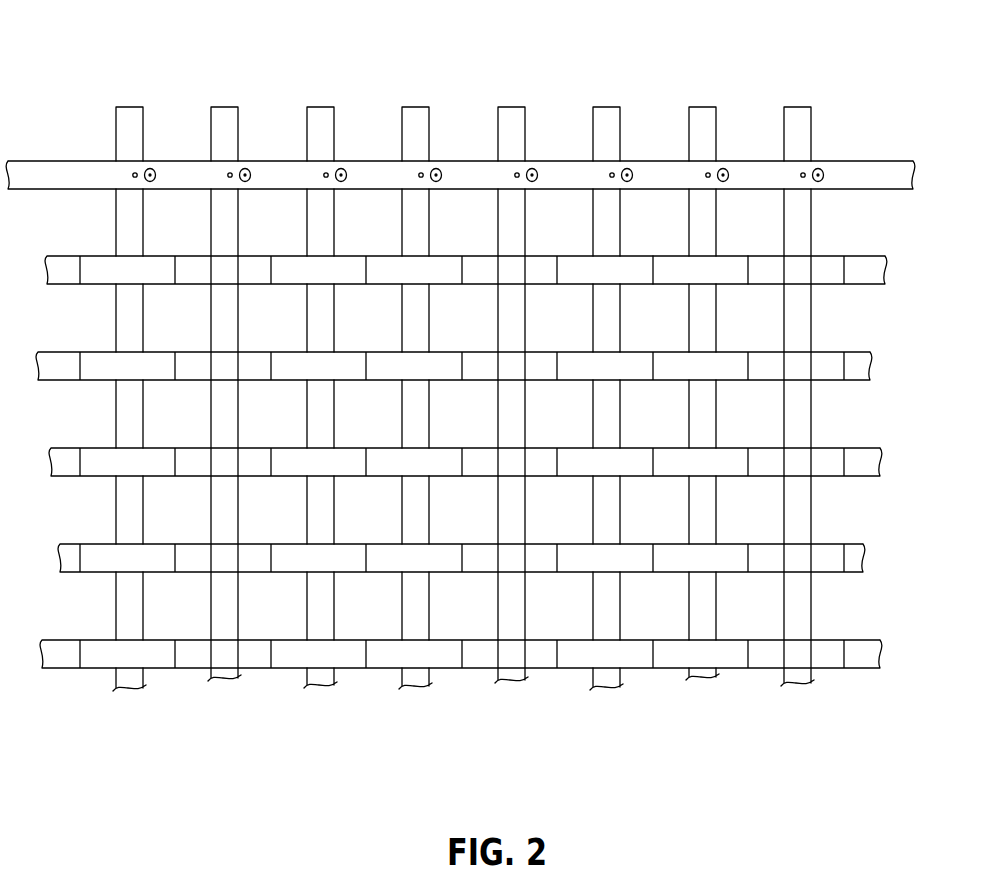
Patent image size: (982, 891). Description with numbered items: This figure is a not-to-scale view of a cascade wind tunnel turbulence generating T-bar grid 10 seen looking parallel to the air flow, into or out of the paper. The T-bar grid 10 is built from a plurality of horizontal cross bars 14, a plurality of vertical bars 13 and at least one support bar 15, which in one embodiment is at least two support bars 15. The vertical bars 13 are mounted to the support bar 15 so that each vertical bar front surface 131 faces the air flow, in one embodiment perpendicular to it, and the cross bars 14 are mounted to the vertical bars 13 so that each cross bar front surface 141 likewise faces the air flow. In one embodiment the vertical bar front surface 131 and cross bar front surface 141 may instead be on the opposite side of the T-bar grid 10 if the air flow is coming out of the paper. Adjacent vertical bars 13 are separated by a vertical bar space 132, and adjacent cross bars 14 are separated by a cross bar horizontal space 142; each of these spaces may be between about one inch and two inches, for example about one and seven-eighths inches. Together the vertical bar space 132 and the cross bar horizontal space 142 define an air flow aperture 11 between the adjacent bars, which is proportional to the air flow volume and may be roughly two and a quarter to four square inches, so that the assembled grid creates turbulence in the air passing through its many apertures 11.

The T-bar grid 10 is at (460, 396).
The air flow aperture 11 is at (558, 417).
The vertical bar 13 is at (463, 348).
The vertical bar front surface 131 is at (318, 142).
The vertical bar space 132 is at (402, 411).
The cross bar 14 is at (461, 433).
The cross bar front surface 141 is at (700, 271).
The cross bar horizontal space 142 is at (454, 382).
The support bar 15 is at (565, 177).